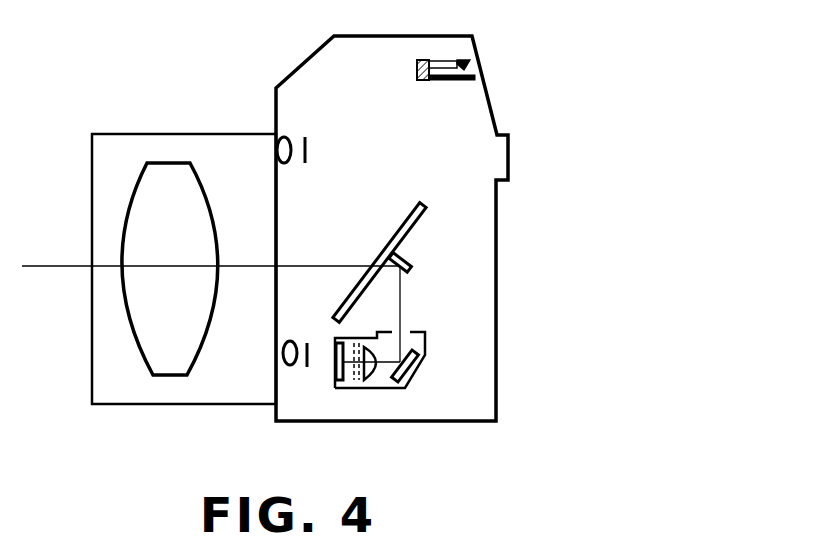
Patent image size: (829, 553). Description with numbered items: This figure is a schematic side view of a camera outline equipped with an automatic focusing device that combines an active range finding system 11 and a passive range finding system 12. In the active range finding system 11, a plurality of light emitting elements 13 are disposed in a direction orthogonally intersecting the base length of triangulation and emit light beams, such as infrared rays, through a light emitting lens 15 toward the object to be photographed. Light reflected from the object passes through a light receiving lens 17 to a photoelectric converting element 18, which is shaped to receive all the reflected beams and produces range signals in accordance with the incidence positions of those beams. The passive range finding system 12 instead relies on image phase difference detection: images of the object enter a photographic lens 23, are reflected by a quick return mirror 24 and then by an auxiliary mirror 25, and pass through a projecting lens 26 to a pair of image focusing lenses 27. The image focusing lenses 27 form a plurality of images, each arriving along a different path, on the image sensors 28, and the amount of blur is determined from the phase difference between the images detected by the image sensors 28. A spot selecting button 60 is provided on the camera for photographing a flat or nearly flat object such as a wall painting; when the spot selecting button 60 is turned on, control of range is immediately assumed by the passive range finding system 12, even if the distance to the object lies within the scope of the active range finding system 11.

The active range finding system 11 is at (298, 135).
The passive range finding system 12 is at (425, 350).
The light emitting elements 13 is at (307, 352).
The light emitting lens 15 is at (278, 358).
The light receiving lens 17 is at (275, 143).
The photoelectric converting element 18 is at (308, 148).
The photographic lens 23 is at (132, 234).
The quick return mirror 24 is at (420, 223).
The auxiliary mirror 25 is at (410, 382).
The projecting lens 26 is at (377, 380).
The image focusing lenses 27 is at (360, 386).
The image sensors 28 is at (335, 372).
The spot selecting button 60 is at (423, 80).